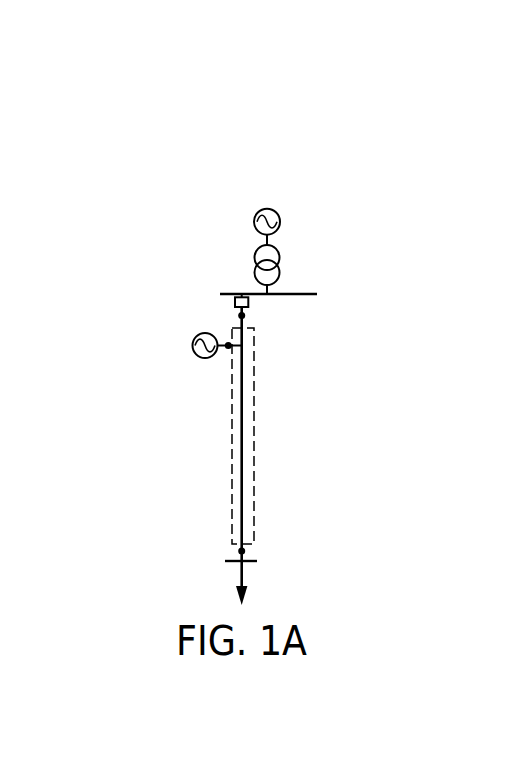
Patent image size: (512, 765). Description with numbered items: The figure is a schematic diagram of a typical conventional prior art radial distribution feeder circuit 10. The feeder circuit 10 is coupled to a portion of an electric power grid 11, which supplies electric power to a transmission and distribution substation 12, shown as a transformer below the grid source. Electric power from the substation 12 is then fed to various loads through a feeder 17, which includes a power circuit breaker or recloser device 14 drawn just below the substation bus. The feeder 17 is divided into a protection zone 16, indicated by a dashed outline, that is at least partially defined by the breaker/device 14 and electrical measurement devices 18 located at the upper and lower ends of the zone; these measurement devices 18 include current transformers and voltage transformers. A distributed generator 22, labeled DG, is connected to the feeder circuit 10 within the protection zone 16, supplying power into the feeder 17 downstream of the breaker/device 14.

The radial distribution feeder circuit 10 is at (300, 97).
The electric power grid 11 is at (267, 208).
The transmission and distribution substation 12 is at (280, 262).
The power circuit breakers and/or recloser devices 14 is at (234, 303).
The protection zone 16 is at (255, 522).
The feeder 17 is at (243, 387).
The electrical measurement devices 18 is at (246, 316).
The distributed generator 22 is at (193, 349).